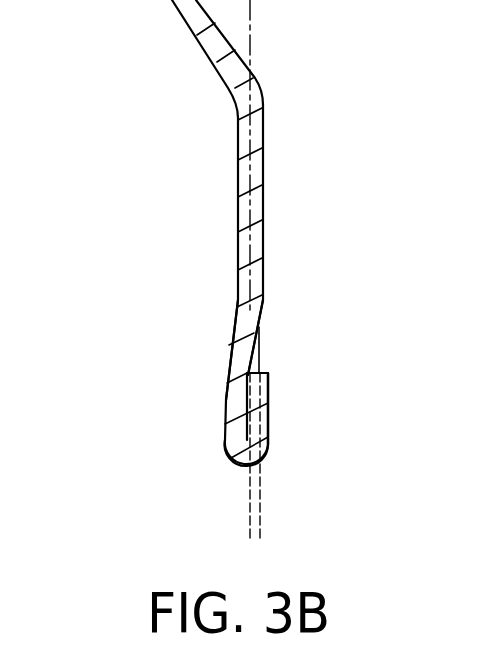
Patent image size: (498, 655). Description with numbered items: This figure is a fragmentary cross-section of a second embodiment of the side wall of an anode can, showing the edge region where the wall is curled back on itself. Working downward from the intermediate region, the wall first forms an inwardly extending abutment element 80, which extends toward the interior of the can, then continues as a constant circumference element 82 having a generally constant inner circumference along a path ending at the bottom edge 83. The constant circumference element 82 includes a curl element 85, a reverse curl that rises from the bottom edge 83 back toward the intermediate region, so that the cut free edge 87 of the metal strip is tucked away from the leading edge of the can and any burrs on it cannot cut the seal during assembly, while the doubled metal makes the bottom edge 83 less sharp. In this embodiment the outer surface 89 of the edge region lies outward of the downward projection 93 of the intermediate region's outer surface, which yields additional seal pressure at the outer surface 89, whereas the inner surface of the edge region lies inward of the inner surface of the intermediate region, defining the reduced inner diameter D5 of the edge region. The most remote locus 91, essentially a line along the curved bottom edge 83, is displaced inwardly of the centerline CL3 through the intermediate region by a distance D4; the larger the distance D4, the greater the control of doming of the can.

The inwardly extending abutment element 80 is at (227, 343).
The constant circumference element 82 is at (224, 403).
The bottom edge 83 is at (258, 458).
The curl element 85 is at (270, 379).
The cut free edge 87 is at (256, 373).
The outer surface of edge region 89 is at (268, 422).
The most remote locus 91 is at (244, 469).
The downward projection of outer surface 93 is at (263, 342).
The centerline CL3 is at (252, 495).
The distance D4 is at (227, 533).
The inner diameter of edge region D5 is at (226, 437).